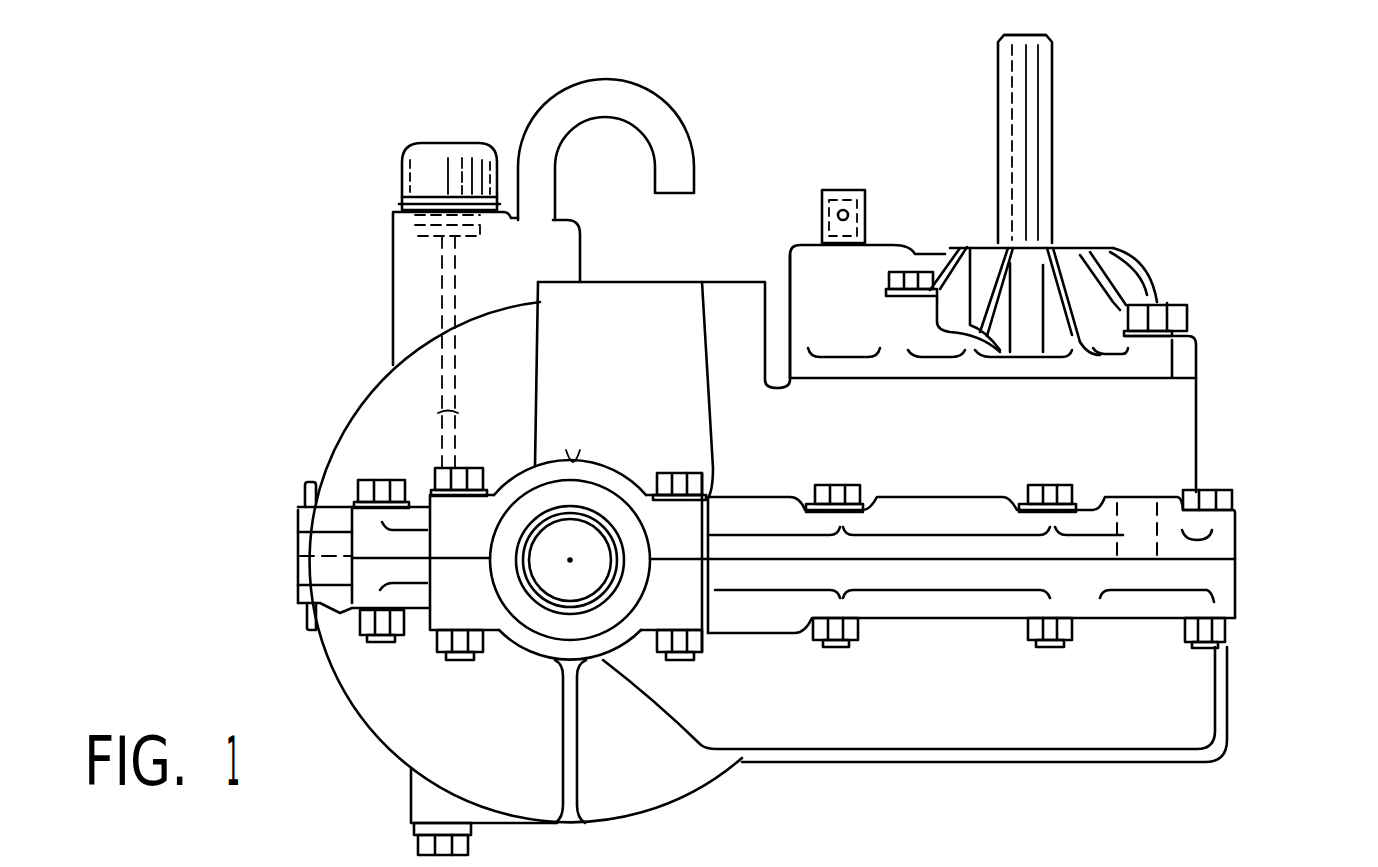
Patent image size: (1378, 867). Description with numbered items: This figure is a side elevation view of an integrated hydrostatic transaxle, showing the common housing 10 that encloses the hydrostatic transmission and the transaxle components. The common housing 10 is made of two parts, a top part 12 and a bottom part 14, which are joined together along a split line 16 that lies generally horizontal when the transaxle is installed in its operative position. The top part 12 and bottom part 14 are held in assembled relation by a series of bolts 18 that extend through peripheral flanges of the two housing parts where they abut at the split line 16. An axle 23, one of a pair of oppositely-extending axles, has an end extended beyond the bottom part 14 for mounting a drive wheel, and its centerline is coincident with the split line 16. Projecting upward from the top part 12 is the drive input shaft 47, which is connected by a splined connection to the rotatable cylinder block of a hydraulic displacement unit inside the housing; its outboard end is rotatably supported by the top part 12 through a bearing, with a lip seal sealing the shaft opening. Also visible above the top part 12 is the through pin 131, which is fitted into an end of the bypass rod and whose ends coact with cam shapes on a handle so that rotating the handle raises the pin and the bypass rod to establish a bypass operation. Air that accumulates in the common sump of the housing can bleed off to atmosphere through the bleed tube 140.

The common housing 10 is at (1258, 454).
The top part 12 is at (1178, 403).
The bottom part 14 is at (1165, 730).
The split line 16 is at (1235, 548).
The bolts 18 is at (382, 480).
The axle 23 is at (560, 580).
The drive input shaft 47 is at (1037, 150).
The through pin 131 is at (850, 213).
The bleed tube 140 is at (668, 135).